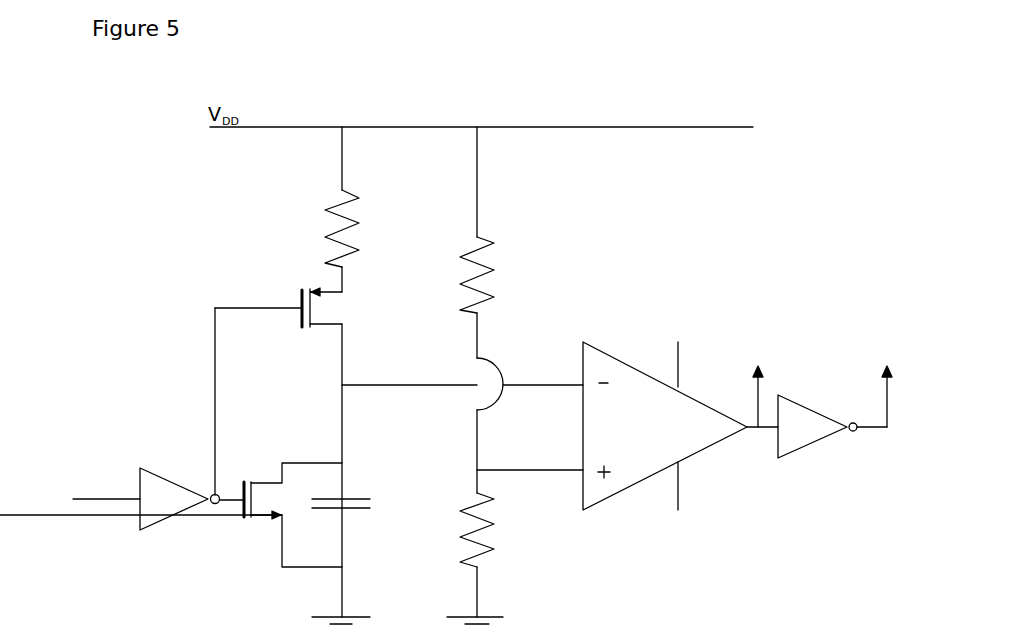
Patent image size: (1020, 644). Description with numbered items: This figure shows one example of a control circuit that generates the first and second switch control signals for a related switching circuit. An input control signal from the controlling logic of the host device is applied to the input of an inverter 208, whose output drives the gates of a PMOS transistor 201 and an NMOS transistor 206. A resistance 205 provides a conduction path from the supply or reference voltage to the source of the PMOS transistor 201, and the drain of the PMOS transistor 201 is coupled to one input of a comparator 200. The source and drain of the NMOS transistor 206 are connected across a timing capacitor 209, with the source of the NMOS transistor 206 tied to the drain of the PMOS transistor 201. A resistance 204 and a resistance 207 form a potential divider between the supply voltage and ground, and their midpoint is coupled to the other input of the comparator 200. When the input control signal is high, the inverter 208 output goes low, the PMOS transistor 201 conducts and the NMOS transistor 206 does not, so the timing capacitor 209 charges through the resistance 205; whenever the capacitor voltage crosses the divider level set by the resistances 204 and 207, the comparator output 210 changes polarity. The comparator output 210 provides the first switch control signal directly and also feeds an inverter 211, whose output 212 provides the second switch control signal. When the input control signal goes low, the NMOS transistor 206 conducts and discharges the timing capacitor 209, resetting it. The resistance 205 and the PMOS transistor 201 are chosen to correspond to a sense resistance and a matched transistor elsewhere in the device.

The comparator 200 is at (665, 426).
The PMOS transistor 201 is at (285, 297).
The resistance 204 is at (453, 242).
The resistance 205 is at (319, 197).
The NMOS transistor 206 is at (171, 515).
The resistance 207 is at (458, 558).
The inverter 208 is at (121, 499).
The timing capacitor 209 is at (350, 492).
The comparator output 210 is at (753, 406).
The inverter 211 is at (817, 426).
The output of inverter 211 212 is at (884, 404).